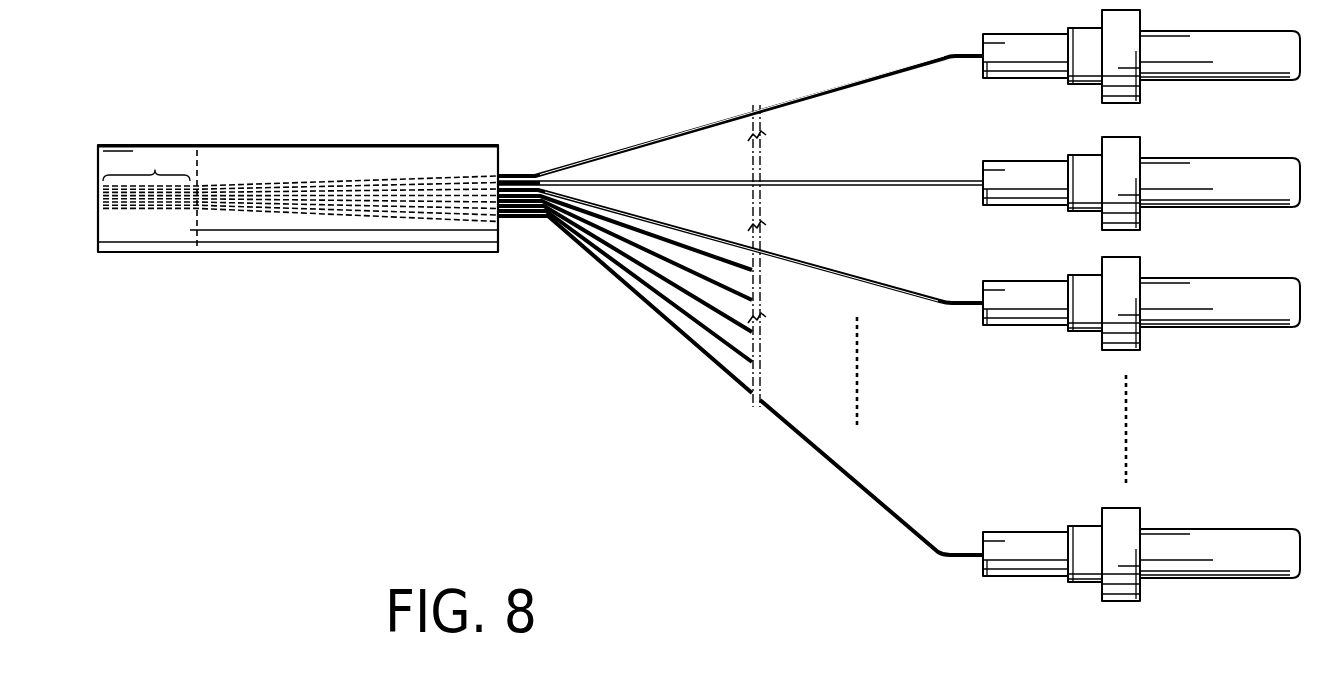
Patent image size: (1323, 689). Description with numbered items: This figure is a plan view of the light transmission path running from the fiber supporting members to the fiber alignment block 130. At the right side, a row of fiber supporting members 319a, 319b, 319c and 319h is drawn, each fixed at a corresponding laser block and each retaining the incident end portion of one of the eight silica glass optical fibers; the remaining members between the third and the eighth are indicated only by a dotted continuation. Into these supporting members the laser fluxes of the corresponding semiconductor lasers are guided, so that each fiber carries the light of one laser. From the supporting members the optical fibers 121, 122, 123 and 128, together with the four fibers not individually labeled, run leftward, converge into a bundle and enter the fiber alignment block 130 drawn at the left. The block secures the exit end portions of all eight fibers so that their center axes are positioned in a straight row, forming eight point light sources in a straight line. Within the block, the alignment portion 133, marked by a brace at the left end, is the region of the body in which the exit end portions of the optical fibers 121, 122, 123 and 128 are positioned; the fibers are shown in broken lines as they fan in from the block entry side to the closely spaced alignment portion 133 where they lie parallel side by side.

The fiber alignment block 130 is at (377, 155).
The alignment portion 133 is at (155, 171).
The optical fiber 121 is at (862, 85).
The optical fiber 122 is at (858, 187).
The optical fiber 123 is at (893, 295).
The optical fiber 128 is at (860, 483).
The fiber supporting member 319a is at (1141, 71).
The fiber supporting member 319b is at (1141, 198).
The fiber supporting member 319c is at (1141, 318).
The fiber supporting member 319h is at (1141, 569).